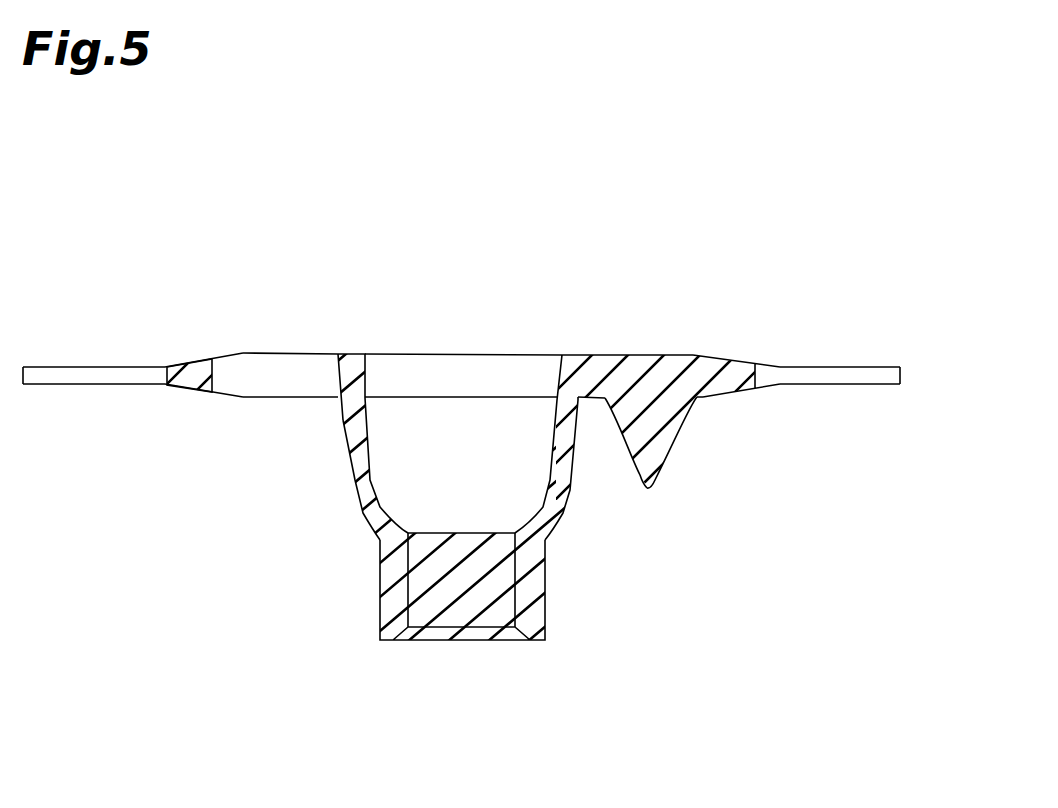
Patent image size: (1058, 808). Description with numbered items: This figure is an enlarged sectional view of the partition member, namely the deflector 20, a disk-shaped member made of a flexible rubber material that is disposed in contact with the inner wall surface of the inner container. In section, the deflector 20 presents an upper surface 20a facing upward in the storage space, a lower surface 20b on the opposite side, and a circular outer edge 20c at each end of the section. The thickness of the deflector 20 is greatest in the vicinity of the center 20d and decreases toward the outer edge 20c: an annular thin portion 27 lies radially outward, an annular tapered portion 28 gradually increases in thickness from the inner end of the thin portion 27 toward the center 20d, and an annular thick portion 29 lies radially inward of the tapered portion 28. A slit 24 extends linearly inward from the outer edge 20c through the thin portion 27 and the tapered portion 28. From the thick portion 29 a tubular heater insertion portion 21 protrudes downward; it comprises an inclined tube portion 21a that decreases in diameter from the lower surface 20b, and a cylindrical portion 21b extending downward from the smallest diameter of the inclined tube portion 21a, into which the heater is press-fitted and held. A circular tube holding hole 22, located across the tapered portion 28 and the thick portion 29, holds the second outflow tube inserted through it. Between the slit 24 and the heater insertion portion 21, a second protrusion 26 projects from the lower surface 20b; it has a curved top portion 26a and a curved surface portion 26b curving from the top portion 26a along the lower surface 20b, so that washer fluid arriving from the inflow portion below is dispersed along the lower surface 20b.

The deflector 20 is at (594, 250).
The upper surface 20a is at (857, 365).
The lower surface 20b is at (843, 386).
The outer edge 20c is at (901, 373).
The center 20d is at (465, 363).
The heater insertion portion 21 is at (400, 518).
The inclined tube portion 21a is at (372, 522).
The cylindrical portion 21b is at (381, 584).
The tube holding hole 22 is at (338, 368).
The slit 24 is at (783, 370).
The second protrusion 26 is at (674, 488).
The top portion 26a is at (647, 489).
The curved surface portion 26b is at (666, 447).
The thin portion 27 is at (64, 376).
The tapered portion 28 is at (225, 365).
The thick portion 29 is at (288, 363).